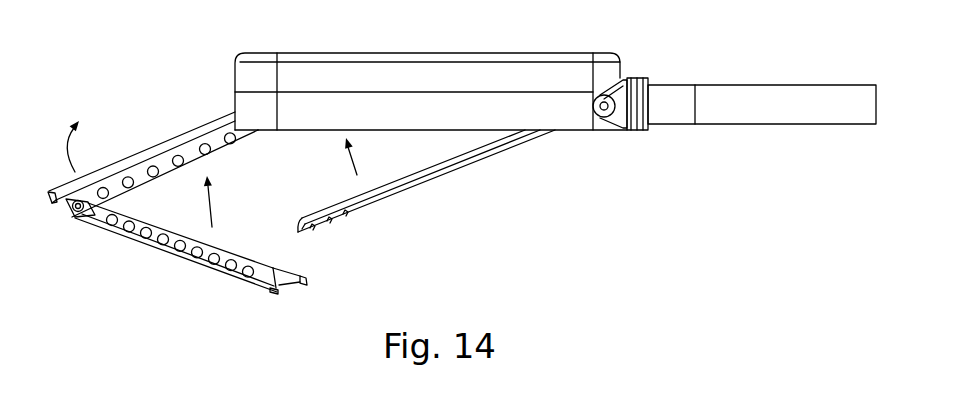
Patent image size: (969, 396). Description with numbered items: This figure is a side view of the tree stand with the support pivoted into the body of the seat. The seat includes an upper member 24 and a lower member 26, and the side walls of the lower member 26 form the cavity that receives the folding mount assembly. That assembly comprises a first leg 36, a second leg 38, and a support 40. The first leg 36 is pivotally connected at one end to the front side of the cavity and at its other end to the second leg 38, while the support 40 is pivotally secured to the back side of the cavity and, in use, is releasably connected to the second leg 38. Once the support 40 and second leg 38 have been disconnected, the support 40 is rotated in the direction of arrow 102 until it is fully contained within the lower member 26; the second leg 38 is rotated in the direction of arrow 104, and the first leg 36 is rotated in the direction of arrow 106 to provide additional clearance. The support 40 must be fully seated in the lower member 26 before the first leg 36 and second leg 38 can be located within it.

The upper member 24 is at (555, 98).
The lower member 26 is at (528, 115).
The first leg 36 is at (190, 152).
The second leg 38 is at (207, 255).
The support 40 is at (420, 173).
The arrow 102 is at (371, 156).
The arrow 104 is at (192, 201).
The arrow 106 is at (55, 146).